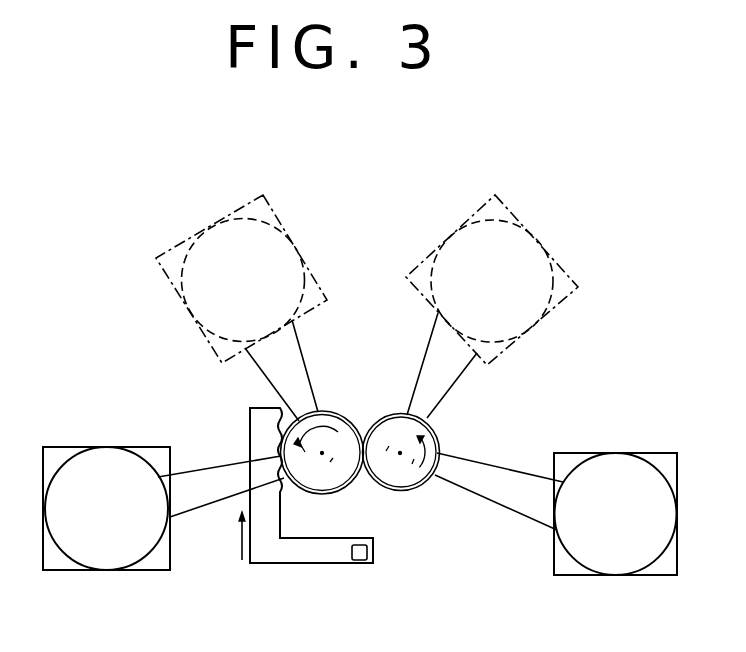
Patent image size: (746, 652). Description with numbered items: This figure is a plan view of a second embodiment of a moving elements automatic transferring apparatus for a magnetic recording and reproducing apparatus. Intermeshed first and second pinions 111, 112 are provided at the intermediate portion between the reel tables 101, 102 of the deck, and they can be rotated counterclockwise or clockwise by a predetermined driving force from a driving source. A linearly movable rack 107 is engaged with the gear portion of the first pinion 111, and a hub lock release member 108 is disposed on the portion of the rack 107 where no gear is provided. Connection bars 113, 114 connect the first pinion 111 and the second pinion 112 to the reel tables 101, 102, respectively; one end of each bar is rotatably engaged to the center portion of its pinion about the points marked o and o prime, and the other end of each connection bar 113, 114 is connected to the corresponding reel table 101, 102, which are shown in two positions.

The reel table 101 is at (207, 237).
The reel table 102 is at (525, 247).
The rack 107 is at (250, 420).
The hub lock release member 108 is at (357, 562).
The first pinion 111 is at (328, 490).
The second pinion 112 is at (402, 483).
The connection bar 113 is at (187, 500).
The connection bar 114 is at (500, 500).